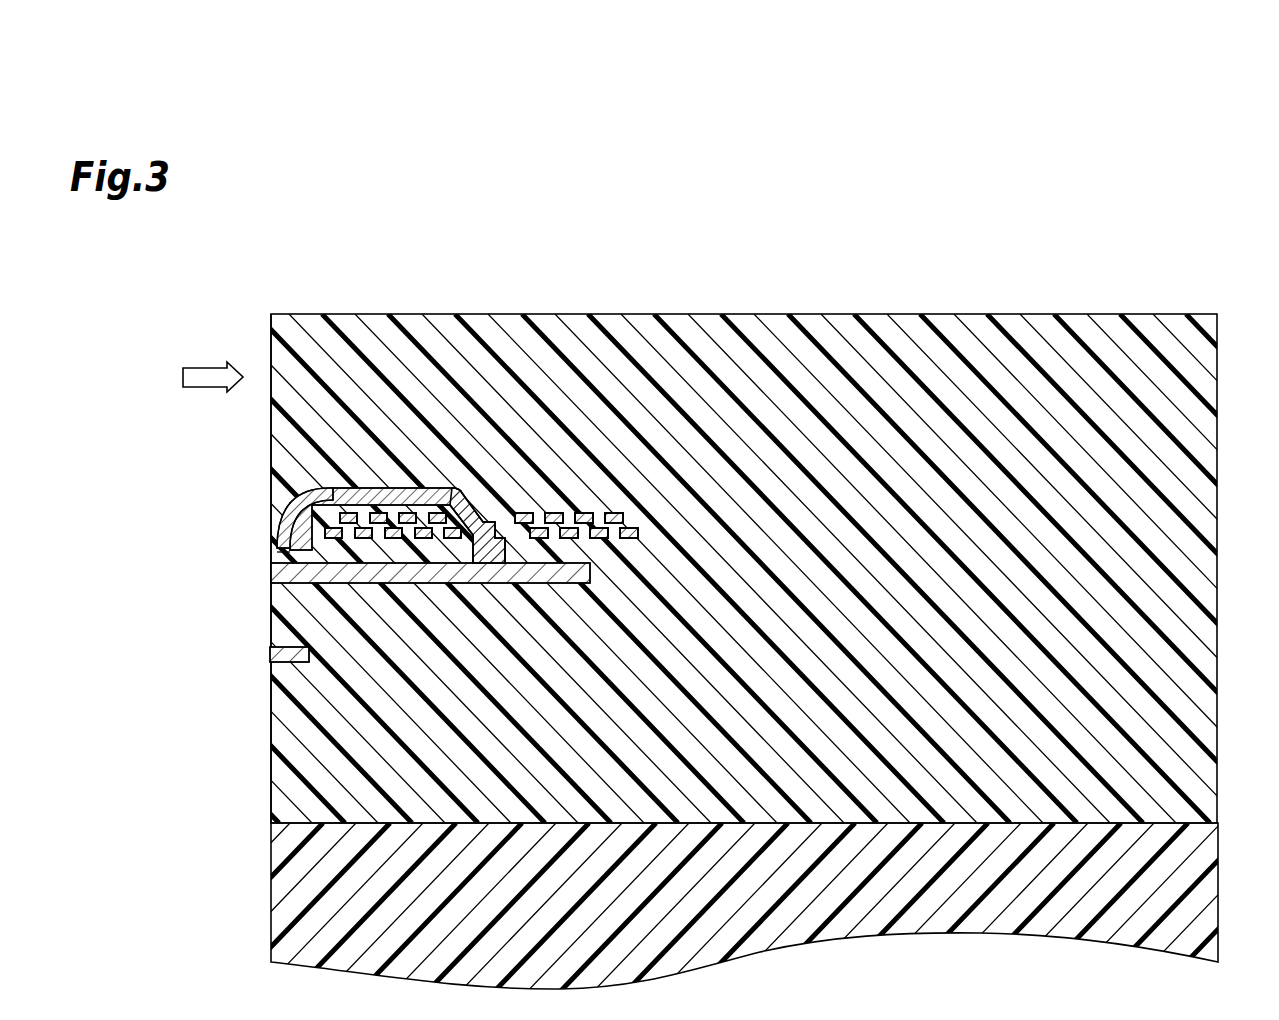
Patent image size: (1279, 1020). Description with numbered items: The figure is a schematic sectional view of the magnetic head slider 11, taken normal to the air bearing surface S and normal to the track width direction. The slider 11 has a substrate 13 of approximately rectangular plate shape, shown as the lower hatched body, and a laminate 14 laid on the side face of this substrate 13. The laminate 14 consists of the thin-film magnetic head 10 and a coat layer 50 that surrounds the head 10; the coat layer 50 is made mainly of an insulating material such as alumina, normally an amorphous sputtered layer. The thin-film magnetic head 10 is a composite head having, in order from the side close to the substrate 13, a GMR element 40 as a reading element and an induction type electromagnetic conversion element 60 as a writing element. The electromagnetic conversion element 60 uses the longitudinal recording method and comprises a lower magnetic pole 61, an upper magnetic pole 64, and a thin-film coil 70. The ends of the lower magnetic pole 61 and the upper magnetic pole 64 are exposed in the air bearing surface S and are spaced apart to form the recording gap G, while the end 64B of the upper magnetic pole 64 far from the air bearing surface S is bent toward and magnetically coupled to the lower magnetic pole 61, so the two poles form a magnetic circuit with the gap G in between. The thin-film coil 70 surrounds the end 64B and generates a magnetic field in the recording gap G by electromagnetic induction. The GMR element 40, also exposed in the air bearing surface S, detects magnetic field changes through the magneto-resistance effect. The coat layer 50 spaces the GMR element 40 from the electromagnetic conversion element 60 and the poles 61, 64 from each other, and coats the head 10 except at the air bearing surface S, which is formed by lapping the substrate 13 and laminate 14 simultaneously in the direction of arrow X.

The magnetic head slider 11 is at (170, 290).
The air bearing surface S is at (270, 331).
The coat layer 50 is at (417, 323).
The direction of arrow X is at (213, 366).
The thin-film coil 70 is at (272, 470).
The upper magnetic pole 64 is at (272, 496).
The end of the upper magnetic pole 64B is at (483, 505).
The electromagnetic conversion element 60 is at (391, 514).
The thin-film magnetic head 10 is at (370, 552).
The recording gap G is at (261, 545).
The lower magnetic pole 61 is at (272, 572).
The GMR element 40 is at (290, 647).
The laminate 14 is at (1218, 565).
The substrate 13 is at (287, 885).